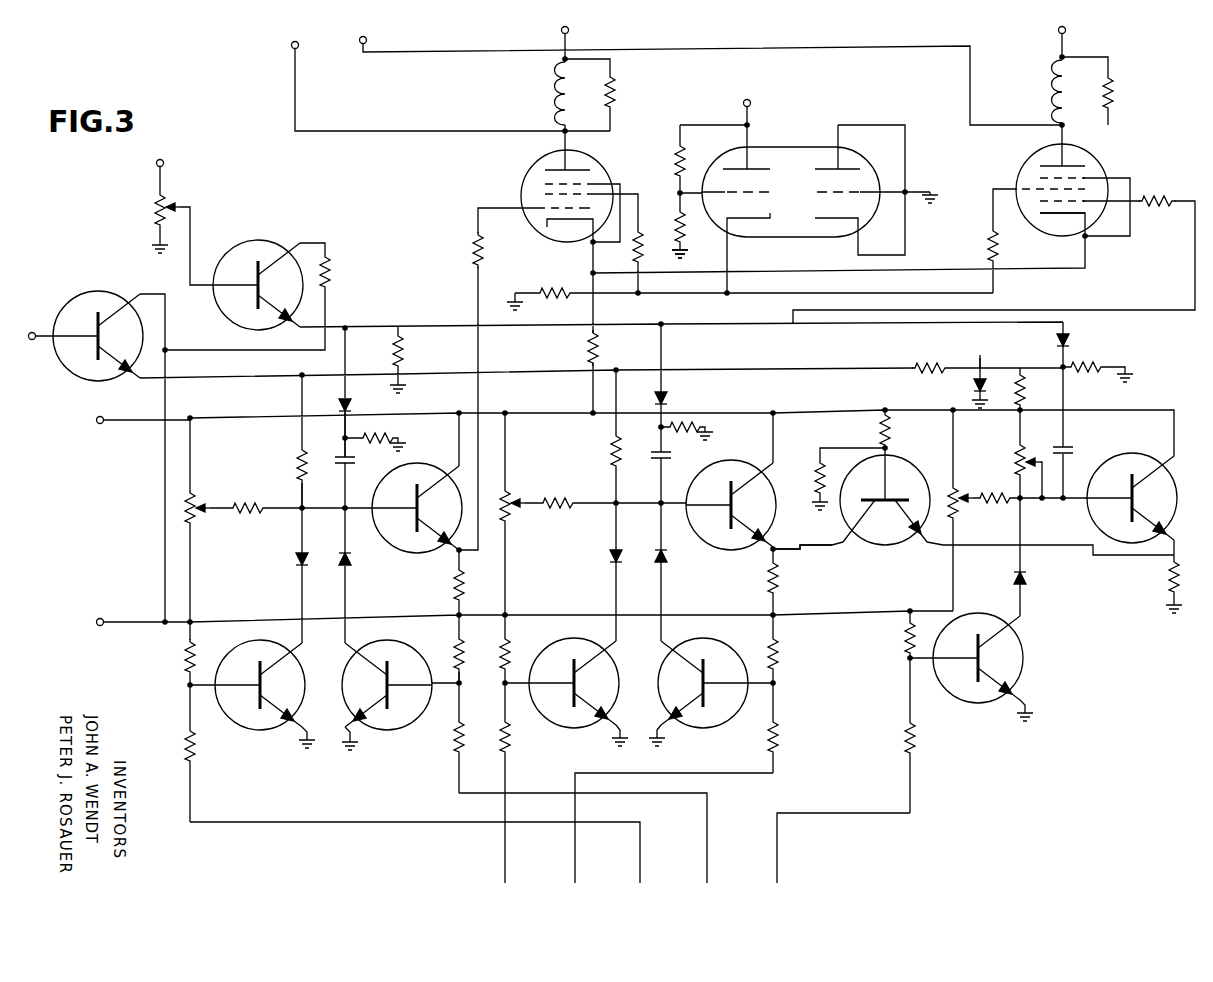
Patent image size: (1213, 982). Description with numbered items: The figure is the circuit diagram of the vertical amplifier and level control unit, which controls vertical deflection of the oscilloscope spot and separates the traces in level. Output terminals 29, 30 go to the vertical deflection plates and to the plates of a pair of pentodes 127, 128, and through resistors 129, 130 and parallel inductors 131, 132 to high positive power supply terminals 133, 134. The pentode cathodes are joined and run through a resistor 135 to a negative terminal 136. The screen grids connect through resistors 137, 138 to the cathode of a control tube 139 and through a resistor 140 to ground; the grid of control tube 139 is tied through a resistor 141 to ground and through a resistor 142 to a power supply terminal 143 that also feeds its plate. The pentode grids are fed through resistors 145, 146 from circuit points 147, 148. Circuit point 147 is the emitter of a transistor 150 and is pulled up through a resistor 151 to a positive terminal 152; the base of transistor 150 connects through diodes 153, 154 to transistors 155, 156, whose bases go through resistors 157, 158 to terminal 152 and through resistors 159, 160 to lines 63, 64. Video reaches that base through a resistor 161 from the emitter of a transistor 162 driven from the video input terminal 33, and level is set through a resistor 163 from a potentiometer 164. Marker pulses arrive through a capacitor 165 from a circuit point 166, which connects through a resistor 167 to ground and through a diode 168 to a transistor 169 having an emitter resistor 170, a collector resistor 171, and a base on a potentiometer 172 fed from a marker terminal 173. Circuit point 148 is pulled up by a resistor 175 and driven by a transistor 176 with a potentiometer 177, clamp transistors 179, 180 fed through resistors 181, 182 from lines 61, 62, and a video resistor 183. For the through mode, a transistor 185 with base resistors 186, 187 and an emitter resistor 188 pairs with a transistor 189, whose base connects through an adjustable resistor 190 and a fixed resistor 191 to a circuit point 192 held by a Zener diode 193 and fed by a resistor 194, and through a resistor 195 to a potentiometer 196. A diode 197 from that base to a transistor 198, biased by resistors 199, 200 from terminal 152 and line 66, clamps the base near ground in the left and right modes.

The output terminal 29 is at (290, 46).
The output terminal 30 is at (367, 39).
The video input terminal 33 is at (32, 333).
The line 61 is at (505, 845).
The line 62 is at (575, 848).
The line 63 is at (640, 852).
The line 64 is at (707, 850).
The line 66 is at (783, 862).
The pentode 127 is at (603, 172).
The pentode 128 is at (1098, 170).
The resistor 129 is at (616, 96).
The resistor 130 is at (1114, 85).
The inductor 131 is at (558, 96).
The inductor 132 is at (1052, 93).
The power supply terminal 133 is at (569, 30).
The power supply terminal 134 is at (1066, 29).
The resistor 135 is at (585, 345).
The terminal 136 is at (95, 423).
The resistor 137 is at (684, 240).
The resistor 138 is at (990, 255).
The control tube 139 is at (775, 160).
The resistor 140 is at (560, 290).
The resistor 141 is at (698, 255).
The resistor 142 is at (678, 160).
The power supply terminal 143 is at (749, 100).
The resistor 145 is at (472, 254).
The resistor 146 is at (1150, 196).
The circuit point 147 is at (450, 560).
The circuit point 148 is at (802, 560).
The transistor 150 is at (352, 463).
The resistor 151 is at (475, 582).
The power supply terminal 152 is at (112, 598).
The diode 153 is at (298, 570).
The diode 154 is at (352, 570).
The transistor 155 is at (262, 740).
The transistor 156 is at (355, 745).
The resistor 157 is at (185, 662).
The resistor 158 is at (467, 668).
The resistor 159 is at (182, 745).
The resistor 160 is at (455, 745).
The resistor 161 is at (298, 460).
The transistor 162 is at (98, 285).
The resistor 163 is at (268, 500).
The potentiometer 164 is at (190, 485).
The capacitor 165 is at (324, 487).
The circuit point 166 is at (342, 440).
The resistor 167 is at (392, 440).
The diode 168 is at (352, 404).
The transistor 169 is at (258, 245).
The resistor 170 is at (402, 345).
The resistor 171 is at (335, 270).
The potentiometer 172 is at (170, 192).
The terminal 173 is at (165, 163).
The resistor 175 is at (765, 585).
The transistor 176 is at (752, 448).
The potentiometer 177 is at (508, 498).
The transistor 179 is at (560, 725).
The transistor 180 is at (733, 725).
The resistor 181 is at (510, 745).
The resistor 182 is at (780, 740).
The resistor 183 is at (608, 458).
The transistor 185 is at (900, 475).
The resistor 186 is at (812, 468).
The resistor 187 is at (880, 425).
The resistor 188 is at (1170, 590).
The transistor 189 is at (1130, 450).
The adjustable resistor 190 is at (1012, 462).
The fixed resistor 191 is at (1025, 393).
The circuit point 192 is at (983, 351).
The Zener diode 193 is at (965, 395).
The resistor 194 is at (918, 365).
The resistor 195 is at (990, 488).
The potentiometer 196 is at (955, 520).
The diode 197 is at (1026, 580).
The transistor 198 is at (1025, 658).
The resistor 199 is at (905, 645).
The resistor 200 is at (920, 745).